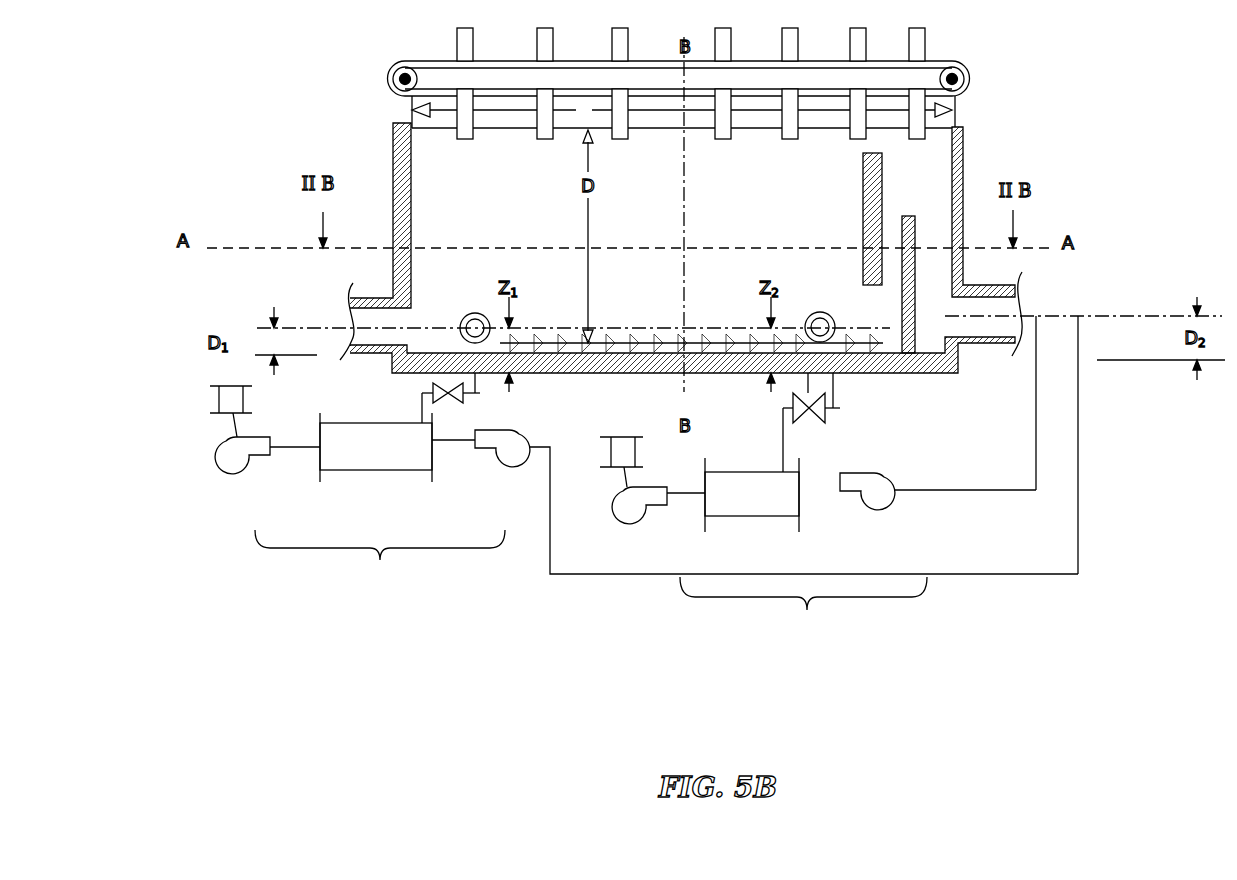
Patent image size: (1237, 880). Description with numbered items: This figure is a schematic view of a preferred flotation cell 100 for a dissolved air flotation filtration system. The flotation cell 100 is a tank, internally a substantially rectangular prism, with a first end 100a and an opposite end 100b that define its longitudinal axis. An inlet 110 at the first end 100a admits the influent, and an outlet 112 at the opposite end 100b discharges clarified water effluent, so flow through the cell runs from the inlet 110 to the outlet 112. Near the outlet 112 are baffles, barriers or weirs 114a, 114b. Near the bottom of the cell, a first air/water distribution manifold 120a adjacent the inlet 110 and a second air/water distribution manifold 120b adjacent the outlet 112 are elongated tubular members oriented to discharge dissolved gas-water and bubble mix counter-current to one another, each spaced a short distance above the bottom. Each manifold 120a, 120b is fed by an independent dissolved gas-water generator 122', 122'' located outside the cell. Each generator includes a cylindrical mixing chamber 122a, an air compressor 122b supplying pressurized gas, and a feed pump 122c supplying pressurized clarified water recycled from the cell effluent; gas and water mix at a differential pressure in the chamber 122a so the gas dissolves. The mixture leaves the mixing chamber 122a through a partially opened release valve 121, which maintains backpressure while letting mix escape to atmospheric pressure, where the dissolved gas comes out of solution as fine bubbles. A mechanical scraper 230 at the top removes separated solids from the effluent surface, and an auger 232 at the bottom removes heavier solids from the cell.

The flotation cell 100 is at (1080, 116).
The first end 100a is at (393, 124).
The opposite end 100b is at (963, 147).
The inlet 110 is at (330, 311).
The outlet 112 is at (1052, 294).
The first weir 114a is at (863, 195).
The second weir 114b is at (908, 216).
The first air/water distribution manifold 120a is at (468, 313).
The second air/water distribution manifold 120b is at (823, 312).
The release valve 121 is at (462, 407).
The cylindrical mixing chamber 122a is at (378, 470).
The air compressor 122b is at (232, 474).
The feed pump 122c is at (512, 467).
The dissolved gas-water generator 122' is at (380, 562).
The dissolved gas-water generator 122'' is at (803, 611).
The mechanical scraper 230 is at (926, 43).
The auger 232 is at (600, 342).